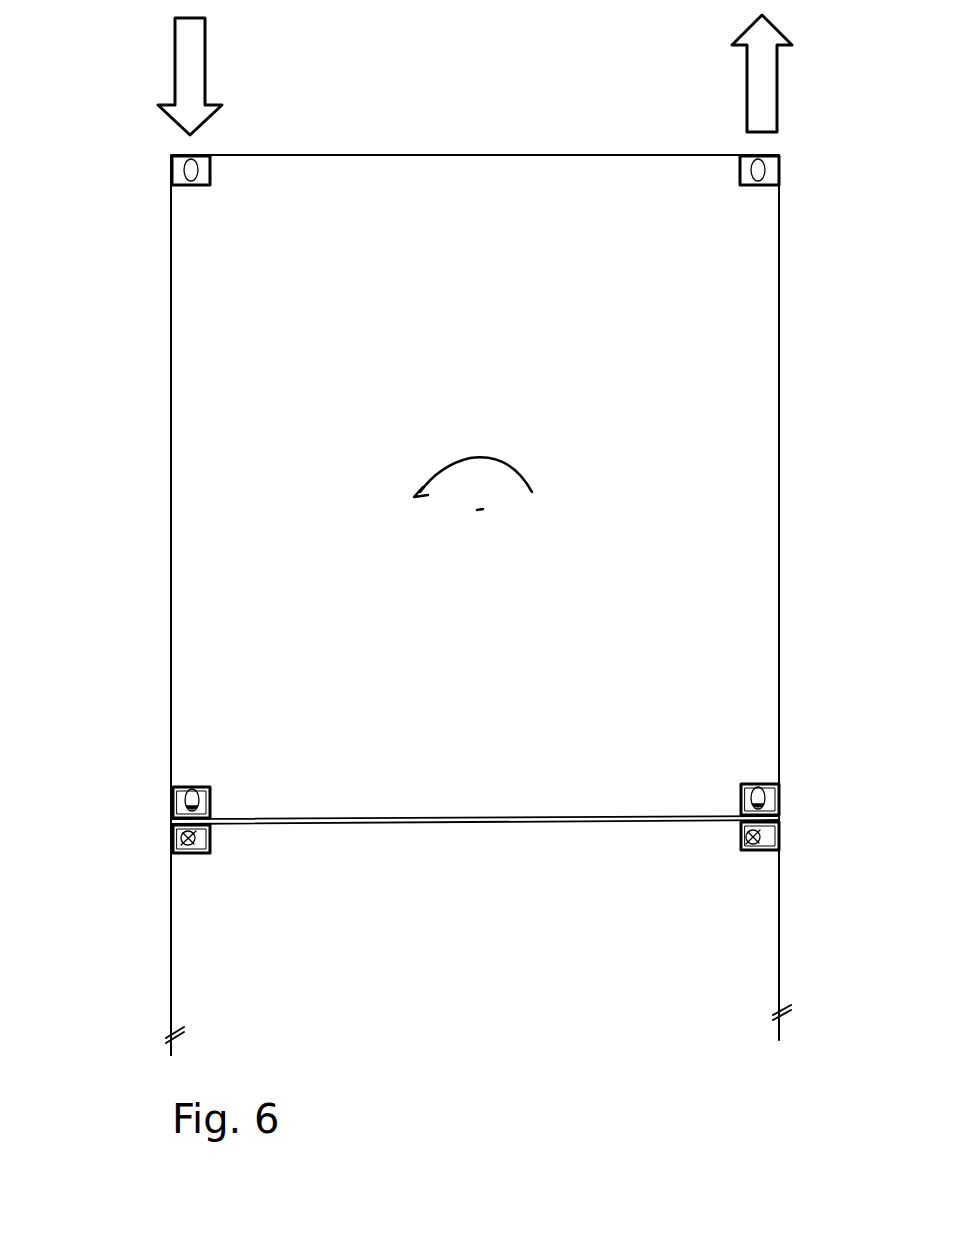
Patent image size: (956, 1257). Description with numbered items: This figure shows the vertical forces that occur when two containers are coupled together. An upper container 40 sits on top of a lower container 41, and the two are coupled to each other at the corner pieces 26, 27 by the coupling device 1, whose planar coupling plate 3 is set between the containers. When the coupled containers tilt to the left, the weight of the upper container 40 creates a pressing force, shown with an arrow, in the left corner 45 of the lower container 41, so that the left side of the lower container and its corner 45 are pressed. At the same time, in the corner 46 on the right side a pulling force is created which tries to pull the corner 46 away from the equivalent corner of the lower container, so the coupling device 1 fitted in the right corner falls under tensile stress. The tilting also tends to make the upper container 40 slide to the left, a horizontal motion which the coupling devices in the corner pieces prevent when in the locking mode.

The coupling device 1 is at (172, 843).
The coupling plate 3 is at (220, 817).
The corner piece 26 is at (213, 793).
The corner piece 27 is at (212, 848).
The upper container 40 is at (170, 492).
The lower container 41 is at (172, 993).
The left corner 45 is at (157, 829).
The right corner 46 is at (787, 820).